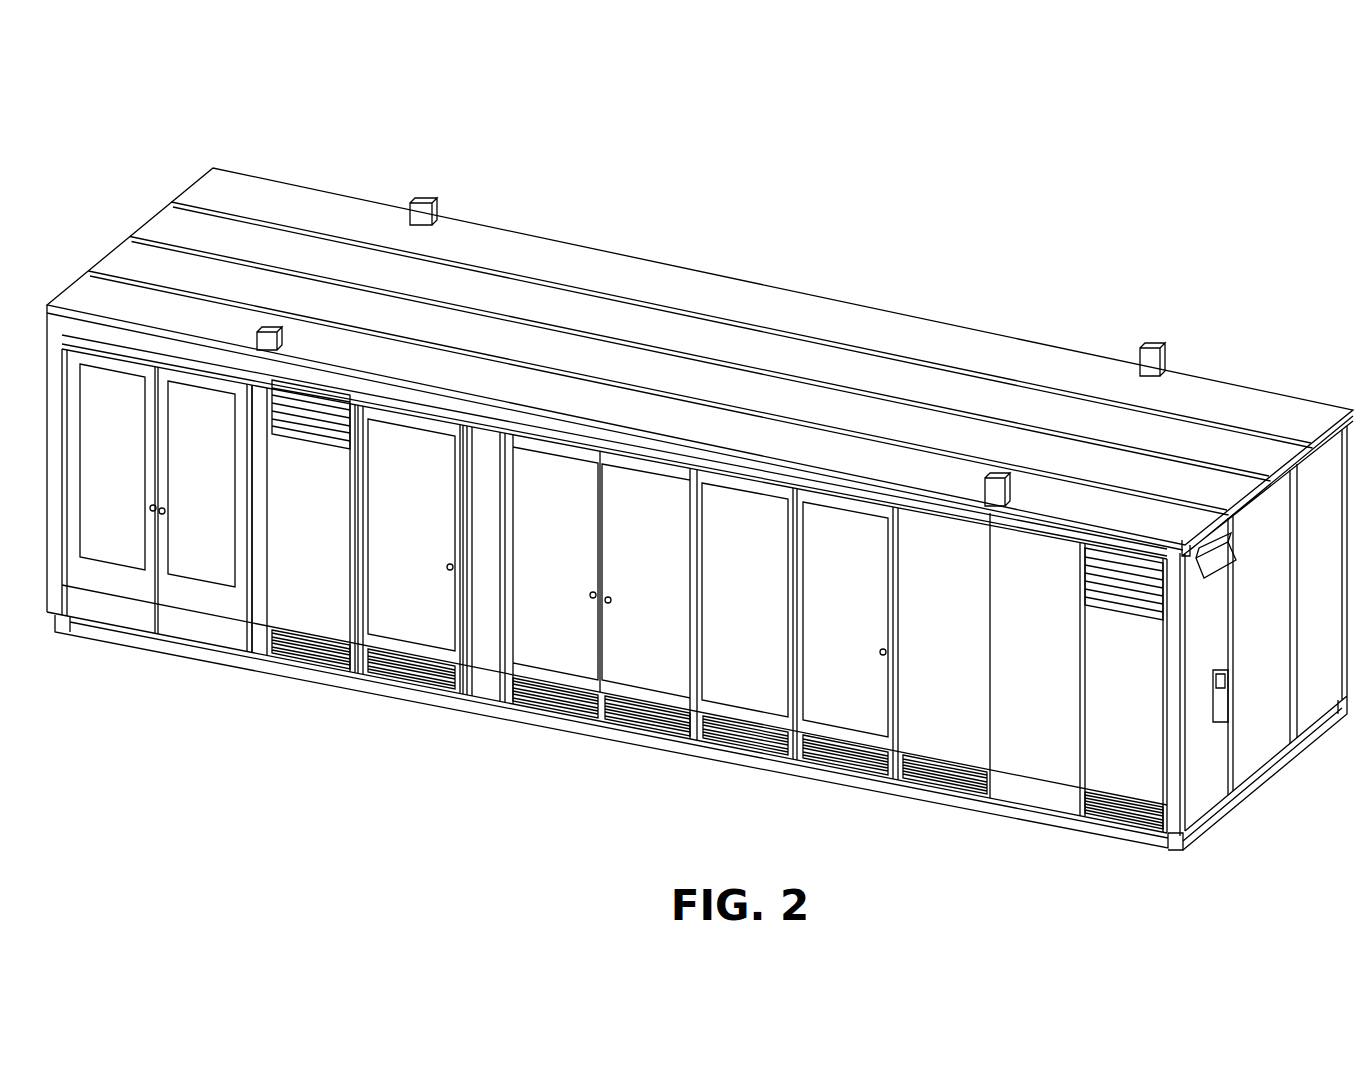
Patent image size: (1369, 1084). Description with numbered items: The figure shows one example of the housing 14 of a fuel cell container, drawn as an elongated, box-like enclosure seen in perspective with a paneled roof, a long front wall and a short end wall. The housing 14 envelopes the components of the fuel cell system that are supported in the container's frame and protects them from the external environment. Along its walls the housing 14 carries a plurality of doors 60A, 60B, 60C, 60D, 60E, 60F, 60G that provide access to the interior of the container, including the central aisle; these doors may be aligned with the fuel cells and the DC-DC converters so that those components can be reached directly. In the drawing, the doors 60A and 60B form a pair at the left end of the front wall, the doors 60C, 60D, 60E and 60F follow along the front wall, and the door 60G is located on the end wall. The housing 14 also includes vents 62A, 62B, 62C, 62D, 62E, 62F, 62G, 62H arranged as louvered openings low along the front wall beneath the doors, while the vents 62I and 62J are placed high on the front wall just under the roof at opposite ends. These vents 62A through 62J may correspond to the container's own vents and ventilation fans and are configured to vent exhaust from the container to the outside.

The housing 14 is at (700, 487).
The door 60A is at (98, 533).
The door 60B is at (195, 552).
The door 60C is at (437, 585).
The door 60D is at (573, 636).
The door 60E is at (678, 660).
The door 60F is at (877, 718).
The door 60G is at (1270, 693).
The vent 62A is at (307, 652).
The vent 62B is at (385, 670).
The vent 62C is at (525, 688).
The vent 62D is at (622, 710).
The vent 62E is at (740, 735).
The vent 62F is at (822, 755).
The vent 62G is at (948, 775).
The vent 62H is at (1125, 808).
The vent 62I is at (298, 385).
The vent 62J is at (1118, 555).